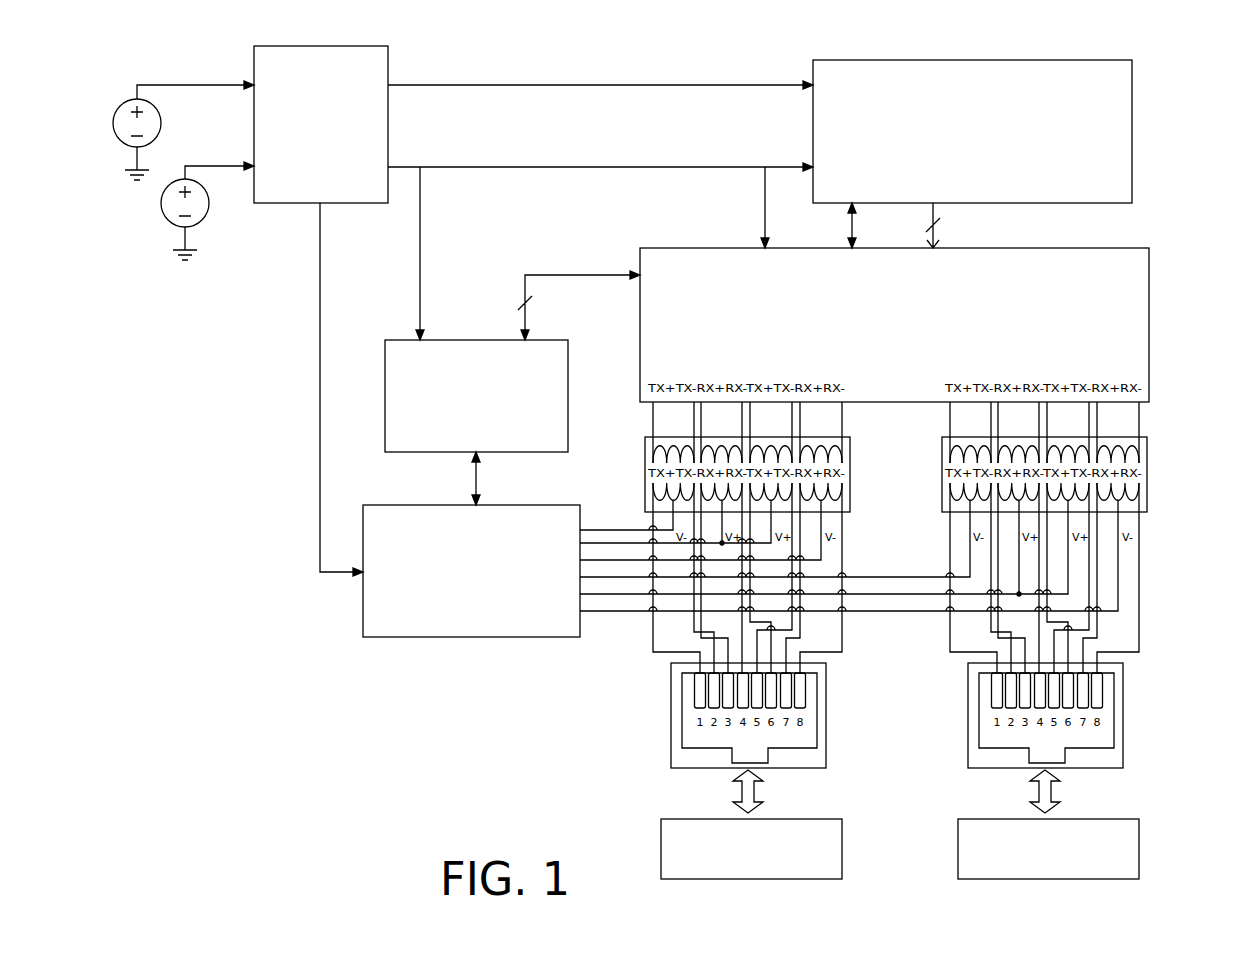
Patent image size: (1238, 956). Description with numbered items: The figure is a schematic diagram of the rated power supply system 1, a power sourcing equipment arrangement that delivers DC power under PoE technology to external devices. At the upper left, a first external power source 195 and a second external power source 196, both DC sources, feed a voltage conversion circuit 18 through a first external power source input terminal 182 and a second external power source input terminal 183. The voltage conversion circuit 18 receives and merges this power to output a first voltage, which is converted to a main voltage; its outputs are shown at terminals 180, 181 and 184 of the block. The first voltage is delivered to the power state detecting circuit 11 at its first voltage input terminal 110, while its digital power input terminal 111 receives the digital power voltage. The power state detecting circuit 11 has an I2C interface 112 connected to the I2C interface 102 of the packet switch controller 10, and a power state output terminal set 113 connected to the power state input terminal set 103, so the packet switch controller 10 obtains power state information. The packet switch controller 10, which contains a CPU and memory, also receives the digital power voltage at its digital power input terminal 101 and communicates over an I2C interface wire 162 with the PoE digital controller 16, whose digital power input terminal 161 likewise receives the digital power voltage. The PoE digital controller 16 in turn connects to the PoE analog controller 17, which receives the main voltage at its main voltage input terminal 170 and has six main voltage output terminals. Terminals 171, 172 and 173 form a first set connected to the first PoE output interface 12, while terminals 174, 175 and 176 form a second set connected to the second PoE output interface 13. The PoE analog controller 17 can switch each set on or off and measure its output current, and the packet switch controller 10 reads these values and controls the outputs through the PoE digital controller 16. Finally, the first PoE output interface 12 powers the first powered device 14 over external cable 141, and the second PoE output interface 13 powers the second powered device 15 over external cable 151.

The rated power supply system 1 is at (994, 32).
The packet switch controller 10 is at (1110, 248).
The digital power input terminal 101 is at (768, 273).
The I2C interface 102 is at (850, 273).
The power state input terminal set 103 is at (932, 273).
The power state detecting circuit 11 is at (1132, 110).
The first voltage input terminal 110 is at (838, 88).
The digital power input terminal 111 is at (838, 161).
The I2C interface 112 is at (858, 213).
The power state output terminal set 113 is at (932, 213).
The first PoE output interface 12 is at (827, 703).
The second PoE output interface 13 is at (1124, 703).
The first powered device 14 is at (842, 848).
The external cable 141 is at (740, 792).
The second powered device 15 is at (1139, 848).
The external cable 151 is at (1055, 792).
The PoE digital controller 16 is at (440, 340).
The digital power input terminal 161 is at (407, 353).
The I2C interface wire 162 is at (579, 293).
The PoE analog controller 17 is at (550, 505).
The main voltage input terminal 170 is at (382, 600).
The main voltage output terminal 171 is at (613, 524).
The main voltage output terminal 172 is at (662, 532).
The main voltage output terminal 173 is at (687, 540).
The main voltage output terminal 174 is at (761, 548).
The main voltage output terminal 175 is at (810, 557).
The main voltage output terminal 176 is at (835, 565).
The voltage conversion circuit 18 is at (303, 203).
The first output port of power supply unit 180 is at (577, 81).
The second output port of power supply unit 181 is at (577, 245).
The first external power source input terminal 182 is at (216, 84).
The second external power source input terminal 183 is at (240, 165).
The third output port of power supply unit 184 is at (331, 377).
The first external power source 195 is at (113, 118).
The second external power source 196 is at (162, 200).